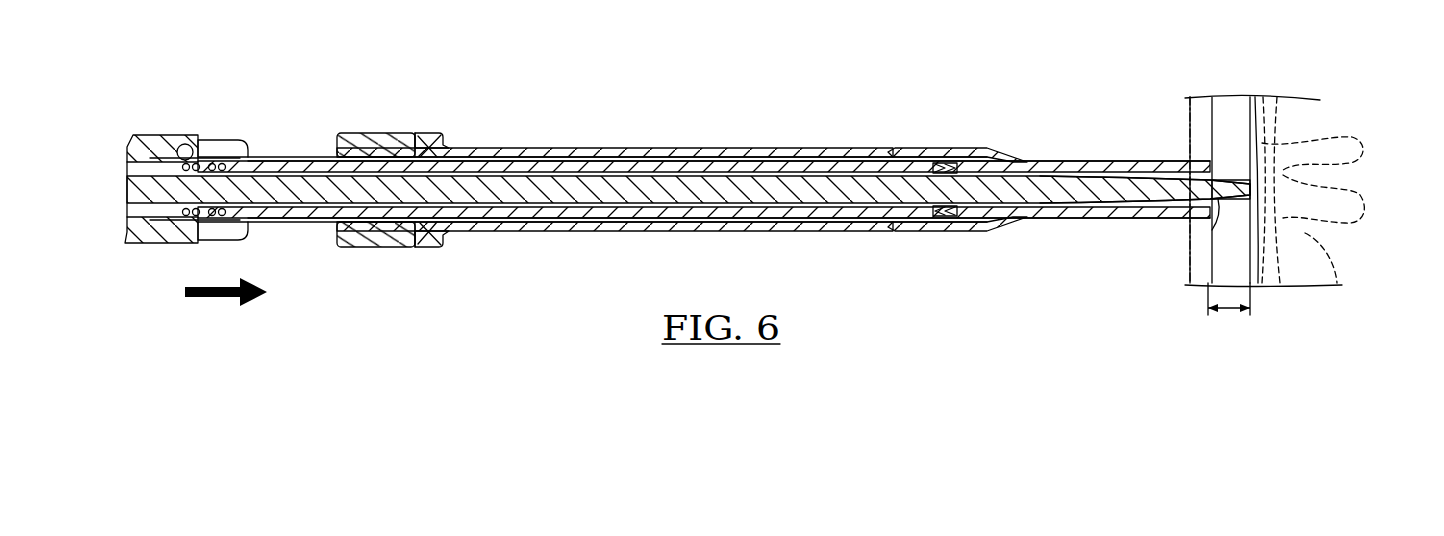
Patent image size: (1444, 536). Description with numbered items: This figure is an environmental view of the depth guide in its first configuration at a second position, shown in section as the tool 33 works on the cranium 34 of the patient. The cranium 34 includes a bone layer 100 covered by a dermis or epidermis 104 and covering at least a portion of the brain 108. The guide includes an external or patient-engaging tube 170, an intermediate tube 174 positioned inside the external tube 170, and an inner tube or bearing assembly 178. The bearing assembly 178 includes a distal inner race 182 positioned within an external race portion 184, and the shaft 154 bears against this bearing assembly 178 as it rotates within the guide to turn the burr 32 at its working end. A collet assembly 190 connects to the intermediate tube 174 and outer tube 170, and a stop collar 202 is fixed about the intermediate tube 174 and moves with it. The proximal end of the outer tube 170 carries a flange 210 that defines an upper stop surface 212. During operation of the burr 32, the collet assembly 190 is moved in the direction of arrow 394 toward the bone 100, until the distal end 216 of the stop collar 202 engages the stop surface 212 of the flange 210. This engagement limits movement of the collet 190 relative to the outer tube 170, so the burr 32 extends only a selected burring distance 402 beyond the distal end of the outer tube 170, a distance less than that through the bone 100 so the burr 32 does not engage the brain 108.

The tool 33 is at (299, 199).
The shaft 154 is at (962, 185).
The inner tube and bearing assembly 178 is at (272, 167).
The intermediate tube 174 is at (301, 154).
The external tube 170 is at (932, 146).
The distal inner race 182 is at (948, 215).
The external race portion 184 is at (938, 216).
The stop collar 202 is at (374, 132).
The upper surface 212 is at (412, 138).
The flange 210 is at (428, 132).
The distal end of stop 216 is at (420, 236).
The collet assembly 190 is at (187, 123).
The direction arrow 394 is at (215, 299).
The bone layer 100 is at (1200, 158).
The dermis or epidermis 104 is at (1185, 112).
The burr 32 is at (1222, 203).
The brain 108 is at (1367, 210).
The burring distance 402 is at (1228, 312).
The cranium 34 is at (1150, 38).